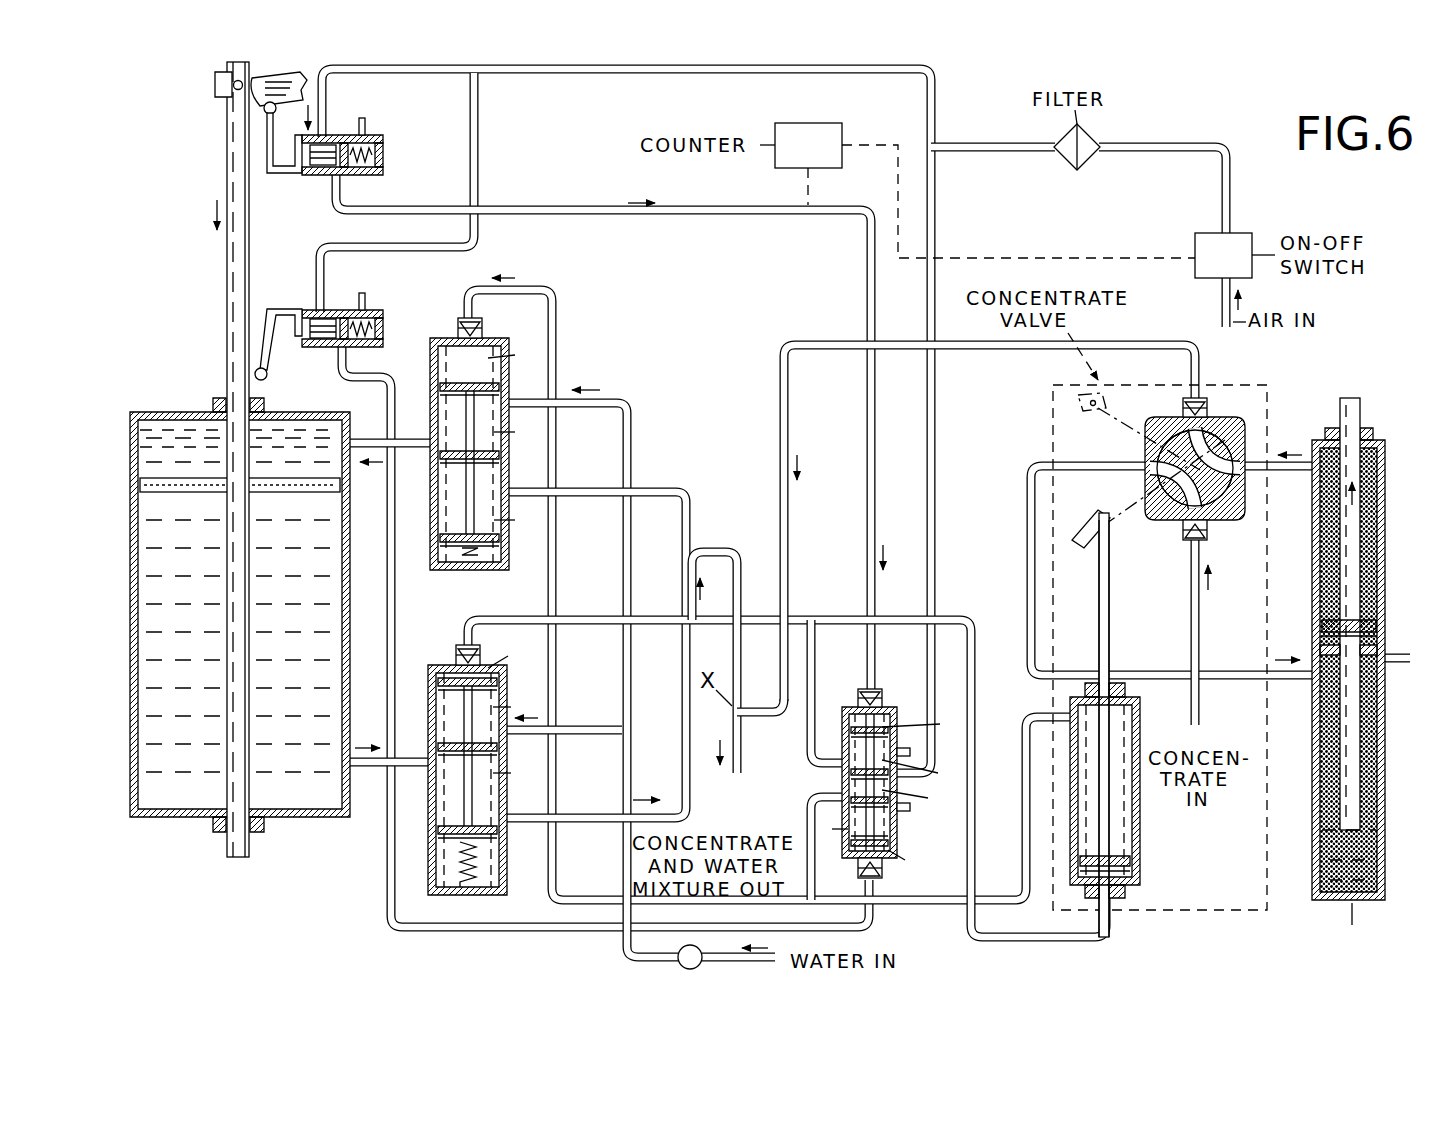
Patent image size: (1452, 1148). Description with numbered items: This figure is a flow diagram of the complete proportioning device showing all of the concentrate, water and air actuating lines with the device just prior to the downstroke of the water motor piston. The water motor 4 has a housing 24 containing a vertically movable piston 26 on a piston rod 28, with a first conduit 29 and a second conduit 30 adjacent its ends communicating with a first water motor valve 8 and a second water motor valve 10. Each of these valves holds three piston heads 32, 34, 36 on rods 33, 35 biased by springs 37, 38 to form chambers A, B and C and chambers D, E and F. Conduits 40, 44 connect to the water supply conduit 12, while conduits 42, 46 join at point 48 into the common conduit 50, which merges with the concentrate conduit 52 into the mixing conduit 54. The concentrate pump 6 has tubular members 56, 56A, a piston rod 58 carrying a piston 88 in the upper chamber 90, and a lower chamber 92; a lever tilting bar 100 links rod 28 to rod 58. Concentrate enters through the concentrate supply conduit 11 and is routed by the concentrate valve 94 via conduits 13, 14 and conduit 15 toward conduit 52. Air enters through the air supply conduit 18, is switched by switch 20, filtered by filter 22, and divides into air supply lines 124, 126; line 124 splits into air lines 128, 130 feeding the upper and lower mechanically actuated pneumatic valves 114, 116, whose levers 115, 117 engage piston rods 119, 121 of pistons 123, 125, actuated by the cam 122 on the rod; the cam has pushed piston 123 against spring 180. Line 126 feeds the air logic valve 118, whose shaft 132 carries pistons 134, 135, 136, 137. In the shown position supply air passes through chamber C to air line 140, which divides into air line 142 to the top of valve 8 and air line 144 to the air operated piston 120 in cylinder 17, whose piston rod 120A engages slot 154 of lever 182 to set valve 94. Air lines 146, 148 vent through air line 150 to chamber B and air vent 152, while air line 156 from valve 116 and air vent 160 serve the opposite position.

The water motor 4 is at (236, 494).
The concentrate pump 6 is at (1349, 668).
The first water motor valve 8 is at (493, 457).
The second water motor valve 10 is at (497, 794).
The concentrate supply conduit 11 is at (1200, 622).
The water supply conduit 12 is at (612, 953).
The conduit 13 is at (1220, 680).
The conduit 14 is at (1290, 470).
The air line 15 is at (670, 216).
The cylinder 17 is at (1130, 728).
The air supply conduit 18 is at (1222, 308).
The switch 20 is at (1212, 240).
The filter 22 is at (1076, 170).
The housing 24 is at (180, 410).
The piston 26 is at (283, 492).
The piston rod 28 is at (230, 270).
The first conduit 29 is at (366, 438).
The second conduit 30 is at (371, 768).
The piston head 32 is at (500, 388).
The rod 33 is at (468, 412).
The piston head 34 is at (500, 457).
The rod 35 is at (470, 797).
The piston head 36 is at (500, 541).
The spring 37 is at (470, 566).
The spring 38 is at (468, 896).
The conduit 40 is at (622, 412).
The conduit 42 is at (656, 492).
The conduit 44 is at (576, 732).
The conduit 46 is at (681, 748).
The junction point 48 is at (699, 553).
The common conduit 50 is at (738, 567).
The concentrate conduit 52 is at (781, 390).
The mixing conduit 54 is at (742, 766).
The tubular member 56 is at (1369, 664).
The tubular member 56A is at (1385, 884).
The piston rod 58 is at (1360, 565).
The piston 88 is at (1378, 626).
The chamber 90 is at (1366, 530).
The chamber 92 is at (1366, 847).
The concentrate valve 94 is at (1240, 427).
The lever tilting bar 100 is at (214, 86).
The upper mechanically actuated pneumatic valve 114 is at (385, 159).
The lever 115 is at (266, 148).
The lower mechanically actuated pneumatic valve 116 is at (385, 322).
The lever 117 is at (268, 367).
The air logic valve 118 is at (892, 773).
The piston rod 119 is at (325, 158).
The air operated piston 120 is at (1133, 861).
The piston rod 120A is at (1110, 600).
The piston rod 121 is at (283, 330).
The cam 122 is at (256, 110).
The piston 123 is at (345, 142).
The air supply line 124 is at (928, 102).
The piston 125 is at (334, 318).
The air supply line 126 is at (935, 210).
The air line 128 is at (432, 73).
The air line 130 is at (479, 140).
The shaft 132 is at (885, 746).
The piston 134 is at (850, 731).
The piston 135 is at (850, 772).
The piston 136 is at (850, 801).
The piston 137 is at (891, 846).
The air line 140 is at (812, 852).
The air line 142 is at (526, 290).
The air line 144 is at (927, 901).
The air line 146 is at (576, 612).
The air line 148 is at (943, 617).
The air line 150 is at (815, 654).
The air vent 152 is at (911, 752).
The slot 154 is at (1085, 530).
The air line 156 is at (387, 907).
The air vent 160 is at (911, 807).
The spring 180 is at (366, 160).
The lever 182 is at (1080, 402).